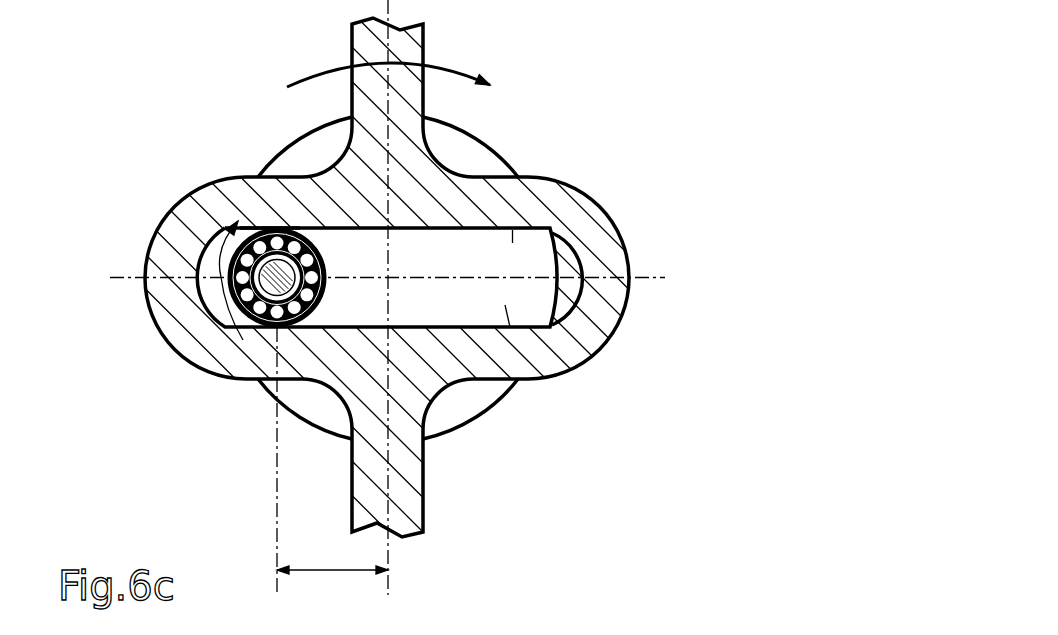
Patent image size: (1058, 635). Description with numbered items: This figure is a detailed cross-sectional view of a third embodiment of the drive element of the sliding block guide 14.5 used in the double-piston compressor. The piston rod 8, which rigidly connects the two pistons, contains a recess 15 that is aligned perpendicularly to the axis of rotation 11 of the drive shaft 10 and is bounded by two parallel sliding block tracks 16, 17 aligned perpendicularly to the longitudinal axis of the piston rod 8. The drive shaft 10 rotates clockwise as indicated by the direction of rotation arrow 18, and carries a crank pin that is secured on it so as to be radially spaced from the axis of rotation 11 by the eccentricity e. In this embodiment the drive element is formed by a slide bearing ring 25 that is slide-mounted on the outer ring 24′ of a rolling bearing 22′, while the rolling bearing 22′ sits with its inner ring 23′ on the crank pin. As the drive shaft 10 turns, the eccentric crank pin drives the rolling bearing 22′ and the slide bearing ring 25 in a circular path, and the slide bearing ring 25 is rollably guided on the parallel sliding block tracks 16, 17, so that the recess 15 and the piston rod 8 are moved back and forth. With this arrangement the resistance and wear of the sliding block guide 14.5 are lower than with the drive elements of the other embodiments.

The piston rod 8 is at (403, 477).
The drive shaft 10 is at (457, 402).
The axis of rotation 11 is at (513, 383).
The slide bearing ring 25 is at (243, 340).
The sliding block guide 14.5 is at (185, 418).
The recess 15 is at (438, 255).
The sliding block track 16 is at (510, 327).
The sliding block track 17 is at (513, 230).
The direction of rotation arrow 18 is at (312, 74).
The rolling bearing 22′ is at (233, 218).
The inner ring 23′ is at (232, 297).
The outer ring 24′ is at (228, 268).